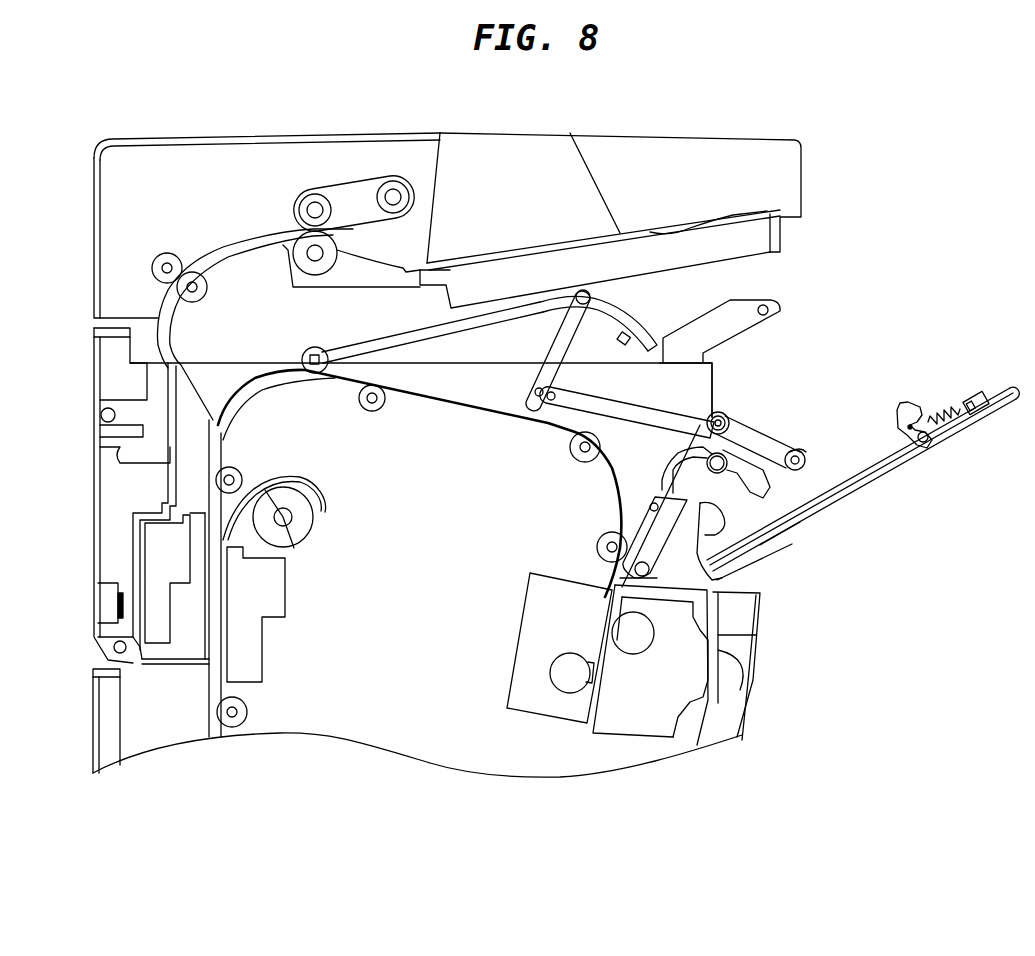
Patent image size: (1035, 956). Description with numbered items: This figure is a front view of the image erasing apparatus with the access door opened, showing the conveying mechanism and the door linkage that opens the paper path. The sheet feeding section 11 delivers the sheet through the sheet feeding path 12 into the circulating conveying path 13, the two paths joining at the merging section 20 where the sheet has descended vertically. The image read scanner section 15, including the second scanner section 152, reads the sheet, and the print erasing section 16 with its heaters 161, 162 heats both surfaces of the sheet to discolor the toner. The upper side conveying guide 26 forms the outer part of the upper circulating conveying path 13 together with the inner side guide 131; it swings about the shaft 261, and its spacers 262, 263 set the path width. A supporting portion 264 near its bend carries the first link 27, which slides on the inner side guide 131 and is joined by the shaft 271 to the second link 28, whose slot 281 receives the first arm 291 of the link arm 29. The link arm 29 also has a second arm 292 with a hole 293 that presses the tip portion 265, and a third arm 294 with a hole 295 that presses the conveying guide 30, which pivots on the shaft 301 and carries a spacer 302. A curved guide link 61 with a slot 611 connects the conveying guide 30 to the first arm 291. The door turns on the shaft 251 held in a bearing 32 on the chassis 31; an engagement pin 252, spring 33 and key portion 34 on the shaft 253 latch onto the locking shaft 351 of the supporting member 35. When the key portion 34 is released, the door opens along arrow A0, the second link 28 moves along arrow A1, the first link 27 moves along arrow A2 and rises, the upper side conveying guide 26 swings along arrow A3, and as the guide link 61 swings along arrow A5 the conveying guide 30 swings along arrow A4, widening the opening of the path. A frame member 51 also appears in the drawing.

The sheet feeding section 11 is at (648, 165).
The sheet feeding path 12 is at (228, 242).
The circulating conveying path 13 is at (245, 362).
The inner side guide 131 is at (273, 392).
The merging section 20 is at (226, 436).
The shaft 261 is at (317, 347).
The upper side conveying guide 26 is at (392, 345).
The first link 27 is at (564, 335).
The supporting portion 264 is at (581, 289).
The spacer 263 is at (633, 330).
The tip portion 265 is at (640, 365).
The spacer 262 is at (497, 364).
The shaft 271 is at (527, 417).
The second link 28 is at (568, 412).
The supporting member 35 is at (713, 325).
The locking shaft 351 is at (776, 308).
The chassis 31 is at (718, 366).
The hole 295 is at (705, 425).
The hole 293 is at (726, 416).
The second arm 292 is at (752, 440).
The first arm 291 is at (808, 446).
The slot 611 is at (790, 433).
The slot 281 is at (827, 419).
The guide link 61 is at (678, 458).
The spacer 302 is at (648, 506).
The conveying guide 30 is at (633, 530).
The shaft 301 is at (633, 570).
The link arm 29 is at (822, 502).
The shaft 251 is at (757, 557).
The third arm 294 is at (810, 536).
The key portion 34 is at (908, 406).
The shaft 253 is at (927, 447).
The spring 33 is at (940, 406).
The engagement pin 252 is at (974, 384).
The heater 161 is at (530, 628).
The heater 162 is at (653, 727).
The print erasing section 16 is at (557, 731).
The bearing 32 is at (762, 592).
The side frame 51 is at (157, 562).
The second scanner section 152 is at (282, 591).
The image read scanner section 15 is at (284, 641).
The arrow A0 is at (858, 297).
The arrow A1 is at (612, 413).
The arrow A2 is at (514, 403).
The arrow A3 is at (500, 343).
The arrow A4 is at (647, 481).
The arrow A5 is at (841, 464).